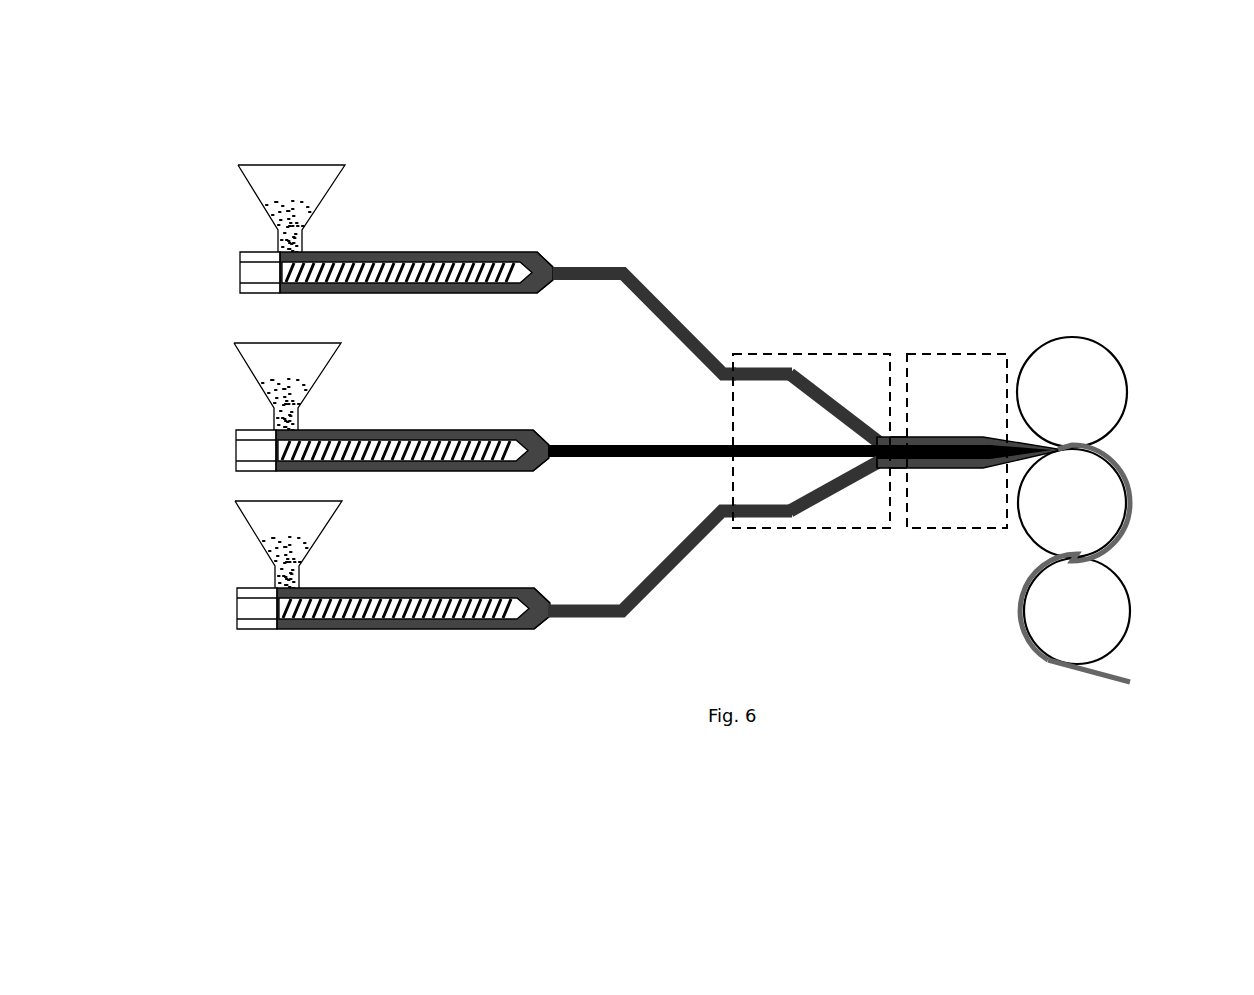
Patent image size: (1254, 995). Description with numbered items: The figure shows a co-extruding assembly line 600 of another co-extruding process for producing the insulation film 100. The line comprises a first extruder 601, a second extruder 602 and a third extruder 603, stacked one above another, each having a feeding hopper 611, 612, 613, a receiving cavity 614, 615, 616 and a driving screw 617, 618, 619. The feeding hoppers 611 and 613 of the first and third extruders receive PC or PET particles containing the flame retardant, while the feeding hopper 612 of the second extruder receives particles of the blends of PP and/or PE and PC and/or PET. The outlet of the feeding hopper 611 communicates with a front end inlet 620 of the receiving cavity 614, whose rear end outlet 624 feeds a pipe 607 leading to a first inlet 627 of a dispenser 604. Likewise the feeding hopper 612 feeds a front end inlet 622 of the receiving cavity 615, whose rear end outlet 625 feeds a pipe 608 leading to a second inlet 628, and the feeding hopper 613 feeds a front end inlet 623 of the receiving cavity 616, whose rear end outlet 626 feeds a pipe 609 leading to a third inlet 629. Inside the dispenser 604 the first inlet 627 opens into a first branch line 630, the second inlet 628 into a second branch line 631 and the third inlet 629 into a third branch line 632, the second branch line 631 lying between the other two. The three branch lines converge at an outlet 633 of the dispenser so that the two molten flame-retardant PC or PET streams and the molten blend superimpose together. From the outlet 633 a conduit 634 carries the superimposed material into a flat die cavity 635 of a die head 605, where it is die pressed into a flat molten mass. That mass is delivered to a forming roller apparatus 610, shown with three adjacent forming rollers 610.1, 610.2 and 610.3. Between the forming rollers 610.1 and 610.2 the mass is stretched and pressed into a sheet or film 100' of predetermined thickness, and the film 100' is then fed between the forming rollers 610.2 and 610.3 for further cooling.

The co-extruding assembly line 600 is at (908, 155).
The first extruder 601 is at (378, 237).
The second extruder 602 is at (384, 420).
The third extruder 603 is at (382, 588).
The dispenser 604 is at (748, 337).
The die head 605 is at (942, 345).
The pipe 607 is at (678, 310).
The pipe 608 is at (642, 440).
The pipe 609 is at (647, 573).
The forming roller apparatus 610 is at (1107, 332).
The forming roller 610.1 is at (1135, 383).
The forming roller 610.2 is at (1105, 520).
The forming roller 610.3 is at (1118, 614).
The feeding hopper 611 is at (268, 187).
The feeding hopper 612 is at (279, 406).
The feeding hopper 613 is at (282, 564).
The receiving cavity 614 is at (405, 250).
The receiving cavity 615 is at (412, 429).
The receiving cavity 616 is at (413, 583).
The driving screw 617 is at (447, 277).
The driving screw 618 is at (406, 416).
The driving screw 619 is at (410, 582).
The front end inlet 620 is at (272, 255).
The front end inlet 622 is at (228, 464).
The front end inlet 623 is at (231, 632).
The rear end outlet 624 is at (548, 262).
The rear end outlet 625 is at (560, 434).
The rear end outlet 626 is at (557, 631).
The first inlet 627 is at (748, 366).
The second inlet 628 is at (737, 446).
The third inlet 629 is at (735, 503).
The first branch line 630 is at (813, 382).
The second branch line 631 is at (818, 434).
The third branch line 632 is at (820, 483).
The outlet of the dispenser 633 is at (881, 435).
The conduit 634 is at (897, 473).
The die cavity 635 is at (948, 473).
The film 100' is at (1114, 552).
The insulation film 100 is at (1064, 682).